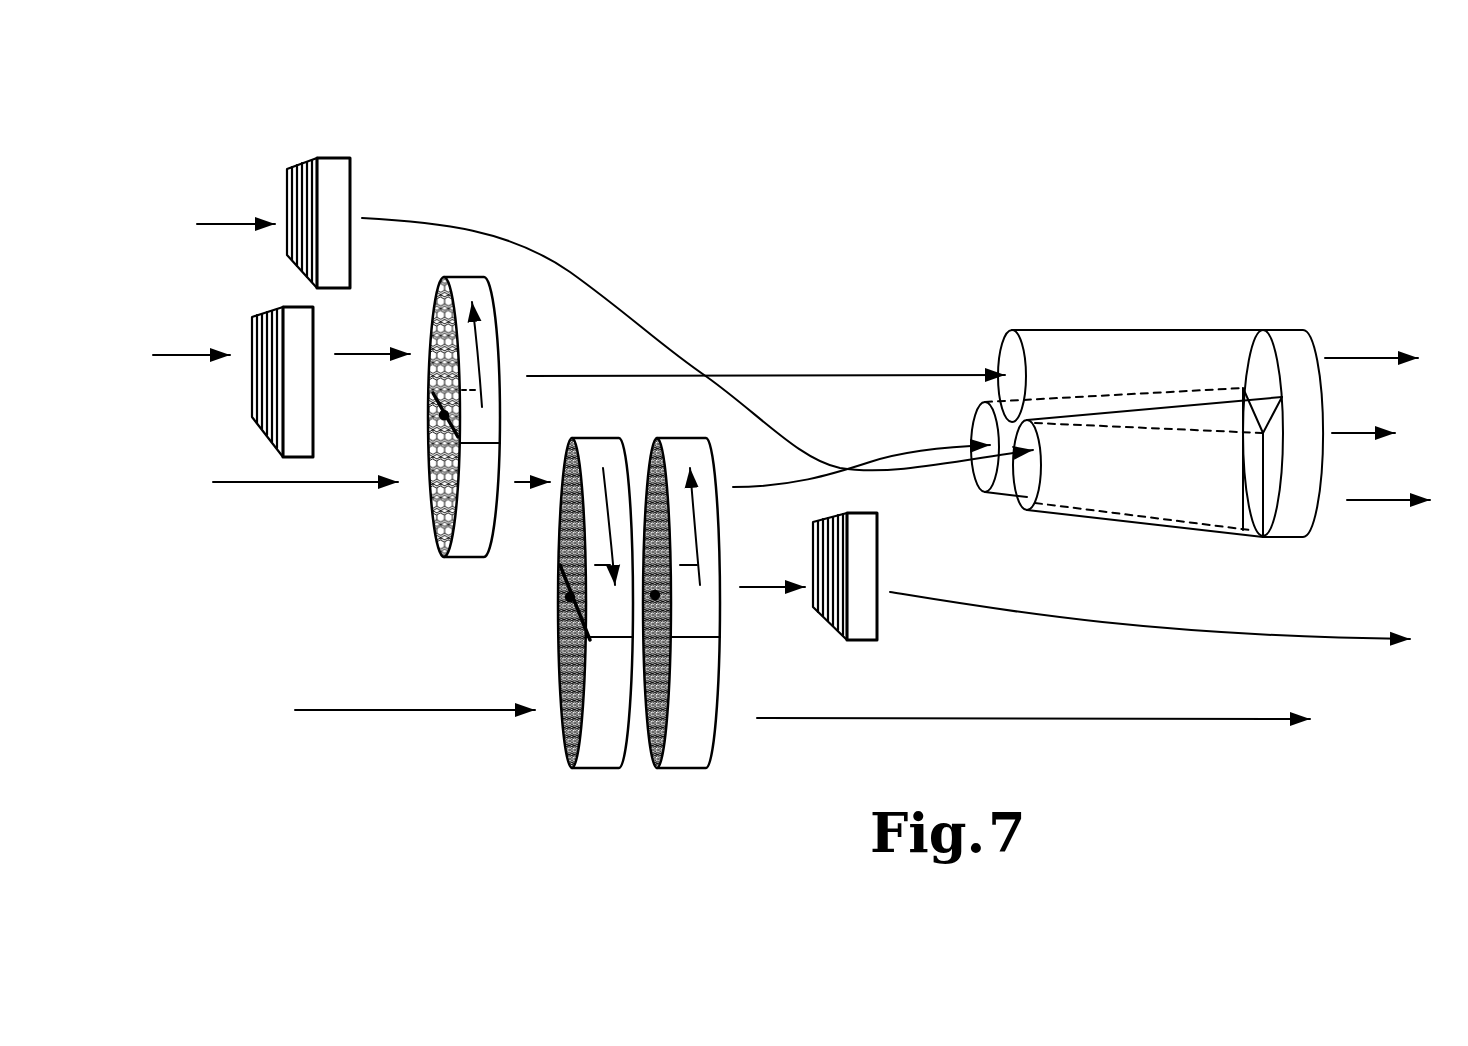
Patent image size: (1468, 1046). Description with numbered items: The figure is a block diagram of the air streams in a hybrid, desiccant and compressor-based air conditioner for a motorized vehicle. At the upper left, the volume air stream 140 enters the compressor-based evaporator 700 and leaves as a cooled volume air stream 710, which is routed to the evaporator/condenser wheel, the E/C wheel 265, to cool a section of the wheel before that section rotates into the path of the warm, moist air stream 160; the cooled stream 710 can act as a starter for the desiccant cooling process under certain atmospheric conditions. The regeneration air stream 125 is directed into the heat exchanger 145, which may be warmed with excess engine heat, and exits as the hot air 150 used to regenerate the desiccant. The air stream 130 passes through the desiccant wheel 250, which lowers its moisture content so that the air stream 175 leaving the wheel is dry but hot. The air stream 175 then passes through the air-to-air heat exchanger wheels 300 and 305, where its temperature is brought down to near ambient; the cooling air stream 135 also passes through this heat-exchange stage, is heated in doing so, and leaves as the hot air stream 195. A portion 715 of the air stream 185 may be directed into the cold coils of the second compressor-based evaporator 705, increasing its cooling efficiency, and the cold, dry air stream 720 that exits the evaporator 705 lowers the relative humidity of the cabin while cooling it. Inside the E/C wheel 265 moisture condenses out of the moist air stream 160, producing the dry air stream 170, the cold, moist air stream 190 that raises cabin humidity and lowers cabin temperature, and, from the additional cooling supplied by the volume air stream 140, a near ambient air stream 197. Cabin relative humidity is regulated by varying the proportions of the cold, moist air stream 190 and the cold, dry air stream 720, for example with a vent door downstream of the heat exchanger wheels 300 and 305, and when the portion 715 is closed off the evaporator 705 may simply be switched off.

The volume air stream 140 is at (240, 224).
The evaporator 700 is at (322, 157).
The cooled volume air stream 710 is at (618, 268).
The heat exchanger 145 is at (252, 332).
The regeneration air stream 125 is at (185, 357).
The hot air 150 is at (360, 357).
The air stream 130 is at (310, 483).
The desiccant wheel 250 is at (460, 275).
The warm, moist air stream 160 is at (650, 376).
The air stream 185 is at (900, 452).
The air stream 175 is at (522, 482).
The cooling air stream 135 is at (445, 710).
The air-to-air heat exchanger wheel 300 is at (600, 770).
The air-to-air heat exchanger wheel 305 is at (685, 770).
The portion of air stream 715 is at (768, 587).
The evaporator 705 is at (863, 640).
The cold, dry air stream 720 is at (1343, 639).
The hot air stream 195 is at (1105, 720).
The E/C wheel 265 is at (1292, 330).
The dry air stream 170 is at (1355, 358).
The air stream 190 is at (1355, 435).
The near ambient air stream 197 is at (1380, 502).